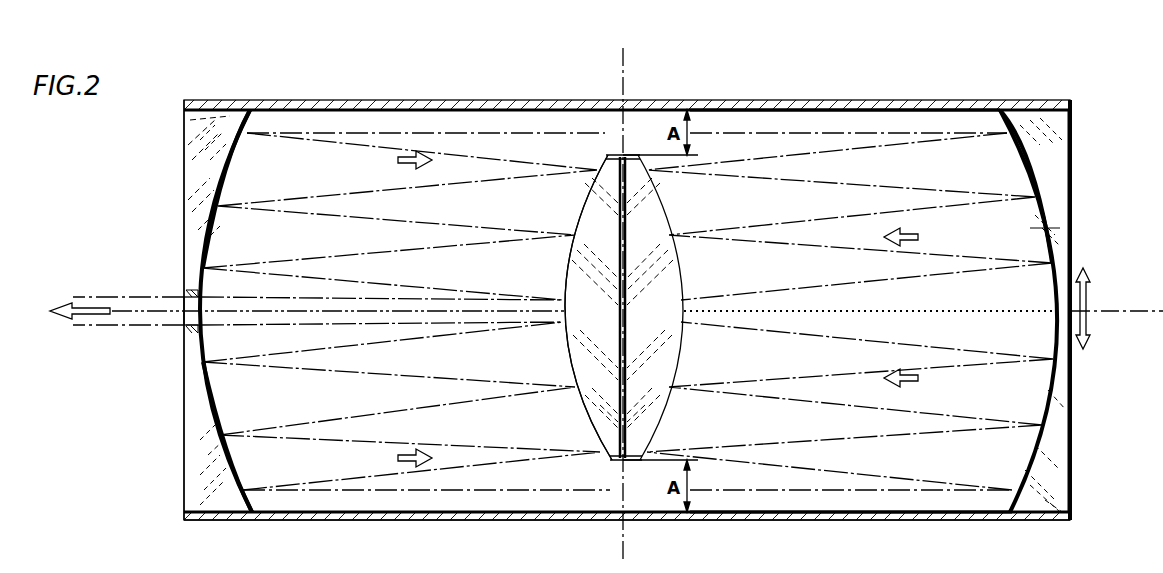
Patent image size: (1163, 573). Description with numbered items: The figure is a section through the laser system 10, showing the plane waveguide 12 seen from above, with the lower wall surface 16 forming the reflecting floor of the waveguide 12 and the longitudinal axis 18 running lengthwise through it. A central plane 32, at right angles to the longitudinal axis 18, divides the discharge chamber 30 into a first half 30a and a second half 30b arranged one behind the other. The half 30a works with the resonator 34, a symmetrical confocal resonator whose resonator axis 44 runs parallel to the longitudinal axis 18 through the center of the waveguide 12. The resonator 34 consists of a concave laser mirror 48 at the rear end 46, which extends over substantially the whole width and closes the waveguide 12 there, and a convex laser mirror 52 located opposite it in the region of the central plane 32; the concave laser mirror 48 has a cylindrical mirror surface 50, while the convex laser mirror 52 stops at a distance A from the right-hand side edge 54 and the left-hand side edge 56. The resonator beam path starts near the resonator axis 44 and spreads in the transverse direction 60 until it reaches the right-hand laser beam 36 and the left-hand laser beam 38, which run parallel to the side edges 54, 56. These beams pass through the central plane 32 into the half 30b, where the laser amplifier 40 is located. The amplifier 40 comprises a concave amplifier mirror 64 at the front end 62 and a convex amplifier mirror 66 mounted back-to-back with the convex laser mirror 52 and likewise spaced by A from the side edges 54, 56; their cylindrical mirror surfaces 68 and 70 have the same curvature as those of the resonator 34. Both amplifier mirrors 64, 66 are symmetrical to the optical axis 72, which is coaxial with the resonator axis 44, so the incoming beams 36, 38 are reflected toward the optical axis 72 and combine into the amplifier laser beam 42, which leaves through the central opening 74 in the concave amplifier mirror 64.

The laser system 10 is at (870, 82).
The plane waveguide 12 is at (516, 92).
The lower wall surface 16 is at (548, 470).
The longitudinal axis 18 is at (1132, 314).
The discharge chamber 30 is at (950, 462).
The first half of the discharge chamber 30a is at (482, 440).
The second half of the discharge chamber 30b is at (346, 158).
The central plane 32 is at (627, 50).
The resonator 34 is at (930, 150).
The right-hand laser beam 36 is at (752, 130).
The left-hand laser beam 38 is at (762, 498).
The laser amplifier 40 is at (452, 128).
The amplifier laser beam 42 is at (120, 330).
The resonator axis 44 is at (965, 312).
The rear end 46 is at (1072, 388).
The concave laser mirror 48 is at (1056, 170).
The cylindrical mirror surface 50 is at (1048, 232).
The convex laser mirror 52 is at (433, 307).
The right-hand side edge 54 is at (804, 112).
The left-hand side edge 56 is at (832, 512).
The transverse direction 60 is at (1100, 300).
The front end 62 is at (184, 464).
The concave amplifier mirror 64 is at (194, 200).
The convex amplifier mirror 66 is at (578, 360).
The cylindrical mirror surface of the concave amplifier mirror 68 is at (665, 256).
The cylindrical mirror surface of the convex amplifier mirror 70 is at (572, 246).
The optical axis of the laser amplifier 72 is at (355, 316).
The central opening 74 is at (186, 302).